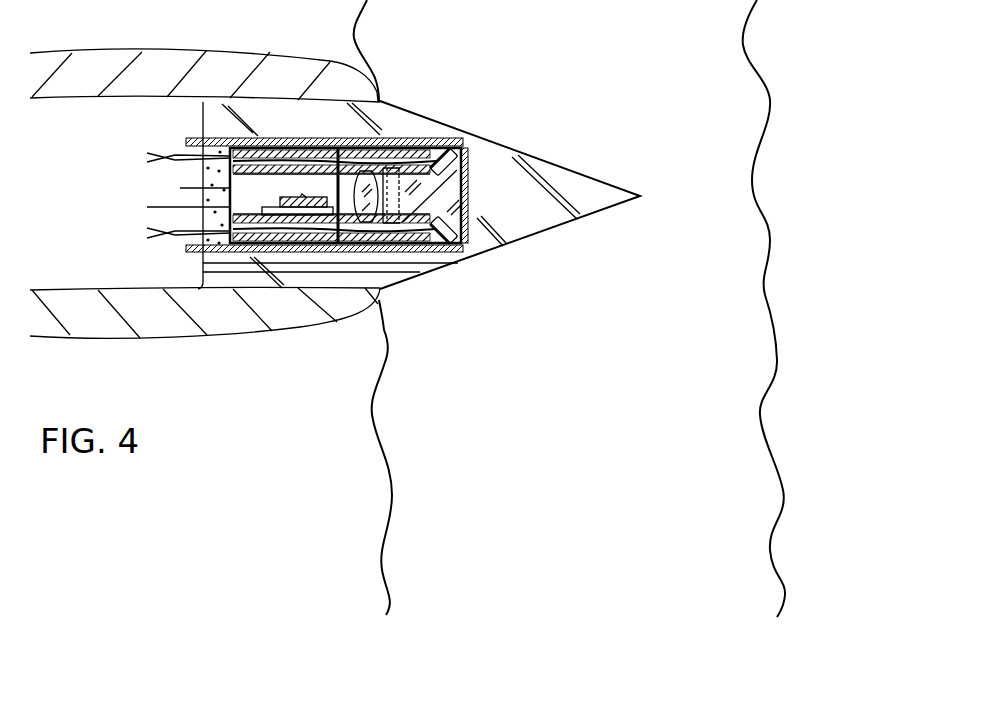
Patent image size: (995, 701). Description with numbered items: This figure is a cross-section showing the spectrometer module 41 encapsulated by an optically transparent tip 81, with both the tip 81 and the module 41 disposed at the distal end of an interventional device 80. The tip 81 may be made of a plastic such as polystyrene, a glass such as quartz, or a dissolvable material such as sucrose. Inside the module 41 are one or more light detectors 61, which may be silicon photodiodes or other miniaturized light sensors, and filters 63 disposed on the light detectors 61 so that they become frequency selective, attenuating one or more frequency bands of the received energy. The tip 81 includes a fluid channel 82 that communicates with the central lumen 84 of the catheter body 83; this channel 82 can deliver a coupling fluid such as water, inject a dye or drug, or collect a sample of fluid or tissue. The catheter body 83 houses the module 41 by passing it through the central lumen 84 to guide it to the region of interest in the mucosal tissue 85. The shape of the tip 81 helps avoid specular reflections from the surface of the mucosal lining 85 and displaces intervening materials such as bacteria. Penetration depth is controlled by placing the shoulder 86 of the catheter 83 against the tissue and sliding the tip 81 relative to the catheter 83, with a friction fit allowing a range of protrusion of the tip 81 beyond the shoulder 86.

The interventional device 80 is at (122, 47).
The catheter body 83 is at (247, 322).
The mucosal tissue 85 is at (382, 412).
The shoulder 86 is at (382, 306).
The central lumen 84 is at (182, 272).
The fluid channel 82 is at (393, 268).
The optically transparent tip 81 is at (547, 227).
The spectrometer module 41 is at (453, 143).
The filters 63 is at (462, 152).
The light detectors 61 is at (438, 150).